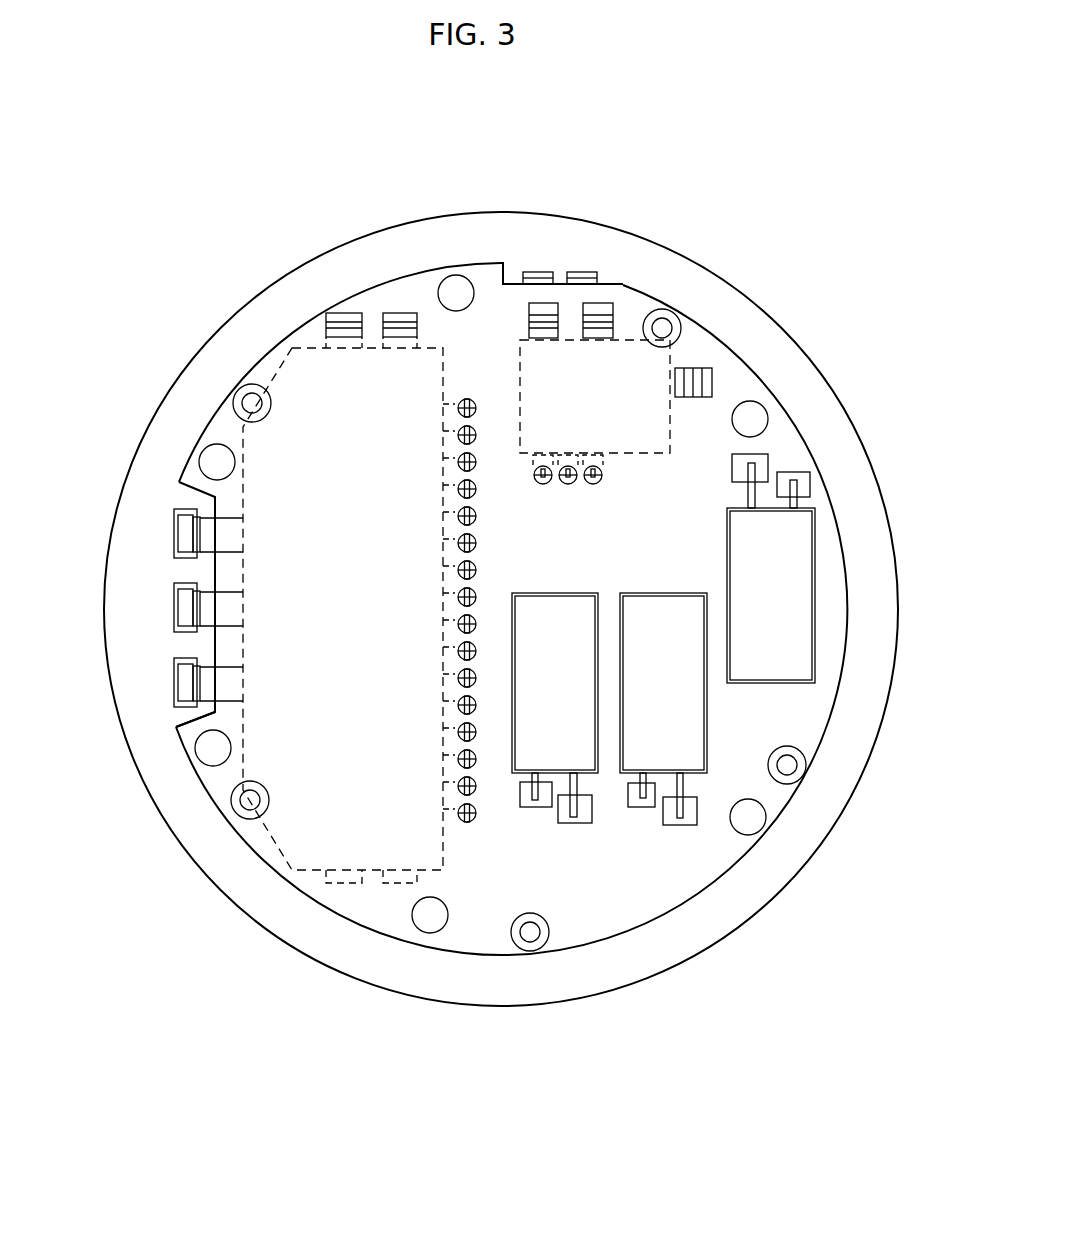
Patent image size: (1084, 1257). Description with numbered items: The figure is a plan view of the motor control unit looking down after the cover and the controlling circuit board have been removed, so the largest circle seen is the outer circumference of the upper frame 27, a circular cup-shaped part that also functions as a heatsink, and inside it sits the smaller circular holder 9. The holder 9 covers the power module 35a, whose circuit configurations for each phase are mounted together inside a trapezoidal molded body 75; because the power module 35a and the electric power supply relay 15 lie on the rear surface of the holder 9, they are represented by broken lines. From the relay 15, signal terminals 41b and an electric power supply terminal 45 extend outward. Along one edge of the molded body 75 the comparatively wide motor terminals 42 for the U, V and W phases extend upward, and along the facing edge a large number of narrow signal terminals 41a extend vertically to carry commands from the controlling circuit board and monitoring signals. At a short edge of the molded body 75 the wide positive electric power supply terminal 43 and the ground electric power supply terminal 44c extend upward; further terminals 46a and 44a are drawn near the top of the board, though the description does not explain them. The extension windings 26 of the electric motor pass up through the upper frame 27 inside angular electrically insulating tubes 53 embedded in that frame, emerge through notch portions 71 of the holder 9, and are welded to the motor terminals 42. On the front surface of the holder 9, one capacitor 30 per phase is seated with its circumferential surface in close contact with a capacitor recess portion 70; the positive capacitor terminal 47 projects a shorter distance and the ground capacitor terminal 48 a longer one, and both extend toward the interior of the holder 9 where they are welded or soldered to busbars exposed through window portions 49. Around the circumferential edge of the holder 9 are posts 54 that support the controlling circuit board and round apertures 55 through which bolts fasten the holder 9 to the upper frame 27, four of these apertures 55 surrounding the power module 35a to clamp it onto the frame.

The holder 9 is at (808, 455).
The electric power supply relay 15 is at (672, 355).
The extension windings 26 is at (178, 687).
The upper frame 27 is at (810, 353).
The capacitors 30 is at (788, 803).
The power module 35a is at (262, 825).
The signal terminals 41a is at (463, 824).
The signal terminals 41b is at (563, 453).
The motor terminals 42 is at (179, 482).
The electric power supply terminal 43 is at (327, 312).
The terminal 44a is at (608, 303).
The electric power supply terminal 44c is at (387, 312).
The electric power supply terminal 45 is at (713, 367).
The terminal 46a is at (532, 303).
The positive capacitor terminals 47 is at (643, 808).
The negative capacitor terminals 48 is at (680, 815).
The window portions 49 is at (673, 827).
The electrically insulating tubes 53 is at (178, 605).
The posts 54 is at (255, 400).
The round apertures 55 is at (217, 458).
The capacitor recess portions 70 is at (812, 580).
The notch portions 71 is at (180, 713).
The molded body 75 is at (318, 840).